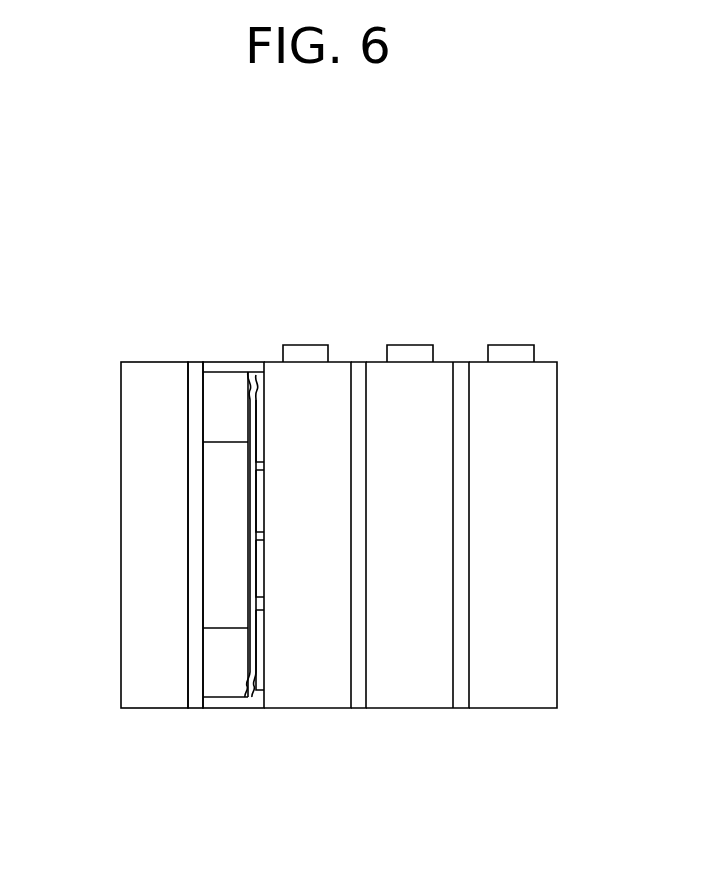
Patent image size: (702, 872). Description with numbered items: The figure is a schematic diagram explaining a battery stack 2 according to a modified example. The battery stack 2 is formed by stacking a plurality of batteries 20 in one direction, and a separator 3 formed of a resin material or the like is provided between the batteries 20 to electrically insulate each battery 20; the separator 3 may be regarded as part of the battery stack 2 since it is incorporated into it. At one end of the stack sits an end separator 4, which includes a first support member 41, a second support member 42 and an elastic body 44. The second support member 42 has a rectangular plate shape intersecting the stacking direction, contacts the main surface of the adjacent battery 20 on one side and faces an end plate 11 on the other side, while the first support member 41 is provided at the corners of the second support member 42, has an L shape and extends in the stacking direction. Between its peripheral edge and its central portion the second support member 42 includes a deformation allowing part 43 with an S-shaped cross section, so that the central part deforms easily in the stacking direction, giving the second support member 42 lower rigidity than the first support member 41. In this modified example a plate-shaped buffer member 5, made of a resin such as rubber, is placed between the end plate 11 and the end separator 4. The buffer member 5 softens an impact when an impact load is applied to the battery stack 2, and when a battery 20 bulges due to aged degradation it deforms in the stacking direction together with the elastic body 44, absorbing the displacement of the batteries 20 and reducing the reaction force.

The battery stack 2 is at (512, 330).
The separator 3 is at (358, 700).
The end separator 4 is at (218, 712).
The buffer member 5 is at (201, 367).
The end plate 11 is at (155, 710).
The battery 20 is at (315, 690).
The first support member 41 is at (228, 710).
The second support member 42 is at (255, 492).
The deformation allowing part 43 is at (245, 697).
The elastic body 44 is at (213, 538).